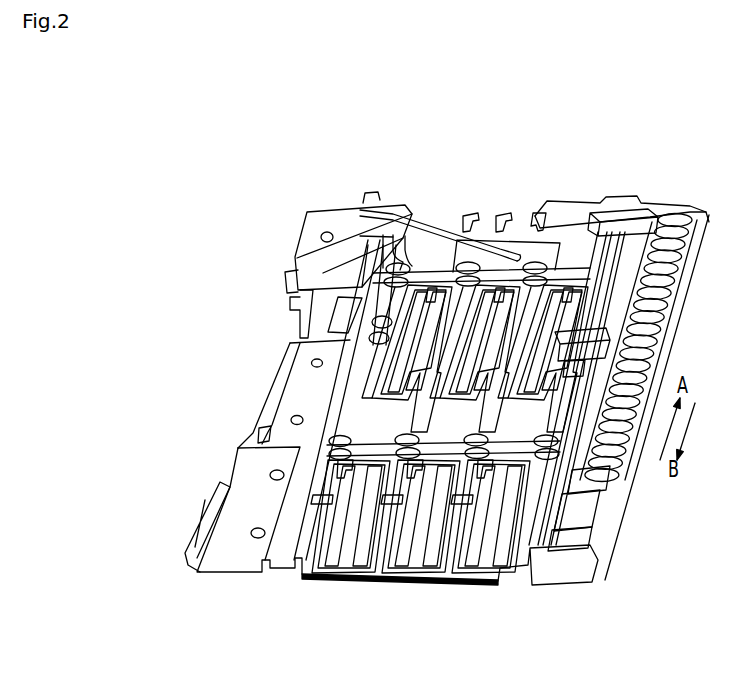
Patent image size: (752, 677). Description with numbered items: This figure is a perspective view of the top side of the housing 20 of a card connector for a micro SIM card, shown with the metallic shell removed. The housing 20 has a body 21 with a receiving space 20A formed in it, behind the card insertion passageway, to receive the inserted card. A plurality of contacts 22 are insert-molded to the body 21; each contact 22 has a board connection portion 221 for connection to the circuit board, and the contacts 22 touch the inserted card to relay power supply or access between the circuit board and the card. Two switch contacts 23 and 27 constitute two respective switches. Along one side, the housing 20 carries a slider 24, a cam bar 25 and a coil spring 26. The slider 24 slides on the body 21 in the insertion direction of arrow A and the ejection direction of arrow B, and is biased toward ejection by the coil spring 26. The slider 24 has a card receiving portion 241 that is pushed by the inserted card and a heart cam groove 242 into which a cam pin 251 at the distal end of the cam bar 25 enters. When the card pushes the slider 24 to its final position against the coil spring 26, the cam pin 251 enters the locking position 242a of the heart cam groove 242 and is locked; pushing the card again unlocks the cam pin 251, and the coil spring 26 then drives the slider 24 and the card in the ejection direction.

The housing 20 is at (653, 147).
The receiving space 20A is at (348, 362).
The body 21 is at (330, 428).
The contacts 22 is at (503, 305).
The board connection portion 221 is at (415, 473).
The switch contact 23 is at (295, 343).
The slider 24 is at (598, 354).
The card receiving portion 241 is at (655, 334).
The heart cam groove 242 is at (575, 502).
The locking position 242a is at (567, 530).
The cam bar 25 is at (580, 478).
The cam pin 251 is at (648, 379).
The coil spring 26 is at (675, 302).
The switch contact 27 is at (531, 228).